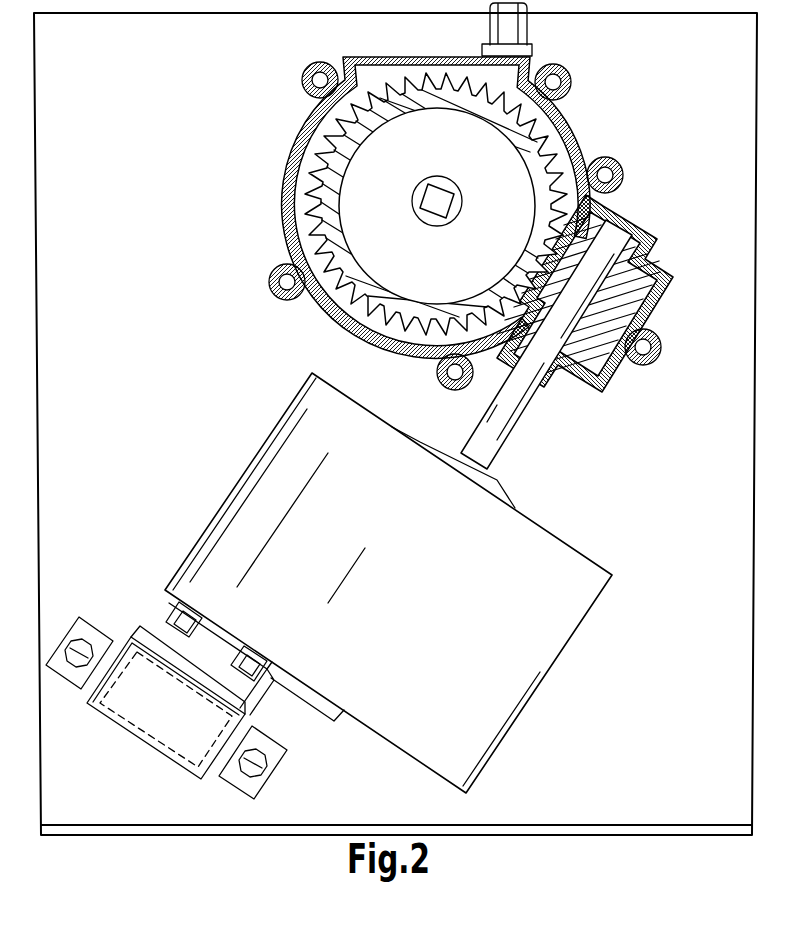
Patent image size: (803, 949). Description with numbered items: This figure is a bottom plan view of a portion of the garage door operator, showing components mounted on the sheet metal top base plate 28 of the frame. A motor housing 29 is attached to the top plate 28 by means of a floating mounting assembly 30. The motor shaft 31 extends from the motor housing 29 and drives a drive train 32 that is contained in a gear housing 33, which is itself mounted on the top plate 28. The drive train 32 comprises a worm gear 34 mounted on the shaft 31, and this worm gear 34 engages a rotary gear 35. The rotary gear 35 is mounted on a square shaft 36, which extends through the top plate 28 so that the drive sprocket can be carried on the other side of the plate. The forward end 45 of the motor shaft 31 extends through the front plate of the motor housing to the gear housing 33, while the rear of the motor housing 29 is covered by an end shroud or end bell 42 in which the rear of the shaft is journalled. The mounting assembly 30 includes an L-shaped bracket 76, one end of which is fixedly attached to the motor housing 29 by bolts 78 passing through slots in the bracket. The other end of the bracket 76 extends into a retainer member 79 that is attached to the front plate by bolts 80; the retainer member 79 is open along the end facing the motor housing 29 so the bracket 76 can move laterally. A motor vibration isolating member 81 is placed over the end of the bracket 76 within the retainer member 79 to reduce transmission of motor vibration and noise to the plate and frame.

The top base plate 28 is at (682, 514).
The motor housing 29 is at (523, 700).
The mounting assembly 30 is at (153, 777).
The motor shaft 31 is at (488, 440).
The drive train 32 is at (588, 110).
The gear housing 33 is at (283, 173).
The worm gear 34 is at (634, 318).
The rotary gear 35 is at (357, 302).
The square shaft 36 is at (460, 203).
The end bell 42 is at (342, 723).
The forward end of motor shaft 45 is at (520, 400).
The L-shaped bracket 76 is at (253, 690).
The bolts 78 is at (172, 612).
The retainer member 79 is at (147, 737).
The bolts 80 is at (93, 637).
The motor vibration isolating member 81 is at (137, 637).